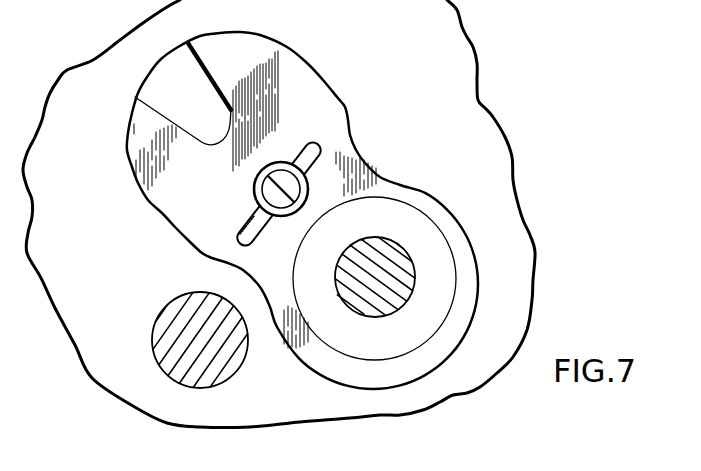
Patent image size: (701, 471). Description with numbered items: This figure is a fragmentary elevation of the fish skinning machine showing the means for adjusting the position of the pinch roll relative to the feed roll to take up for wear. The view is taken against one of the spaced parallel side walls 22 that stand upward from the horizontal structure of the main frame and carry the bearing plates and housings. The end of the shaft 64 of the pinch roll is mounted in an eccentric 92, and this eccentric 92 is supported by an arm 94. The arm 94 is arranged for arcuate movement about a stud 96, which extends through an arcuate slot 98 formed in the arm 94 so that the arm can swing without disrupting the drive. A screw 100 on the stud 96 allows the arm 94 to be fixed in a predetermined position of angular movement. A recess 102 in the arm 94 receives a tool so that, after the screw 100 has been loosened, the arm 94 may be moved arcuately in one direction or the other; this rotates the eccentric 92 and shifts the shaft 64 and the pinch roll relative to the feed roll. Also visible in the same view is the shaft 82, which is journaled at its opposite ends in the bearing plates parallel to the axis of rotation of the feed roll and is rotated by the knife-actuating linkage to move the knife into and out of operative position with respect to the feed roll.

The side wall 22 is at (455, 47).
The arm 94 is at (338, 131).
The recess 102 is at (194, 64).
The eccentric 92 is at (411, 188).
The shaft 64 is at (391, 234).
The shaft 82 is at (175, 322).
The screw 100 is at (252, 172).
The arcuate slot 98 is at (243, 218).
The stud 96 is at (262, 188).